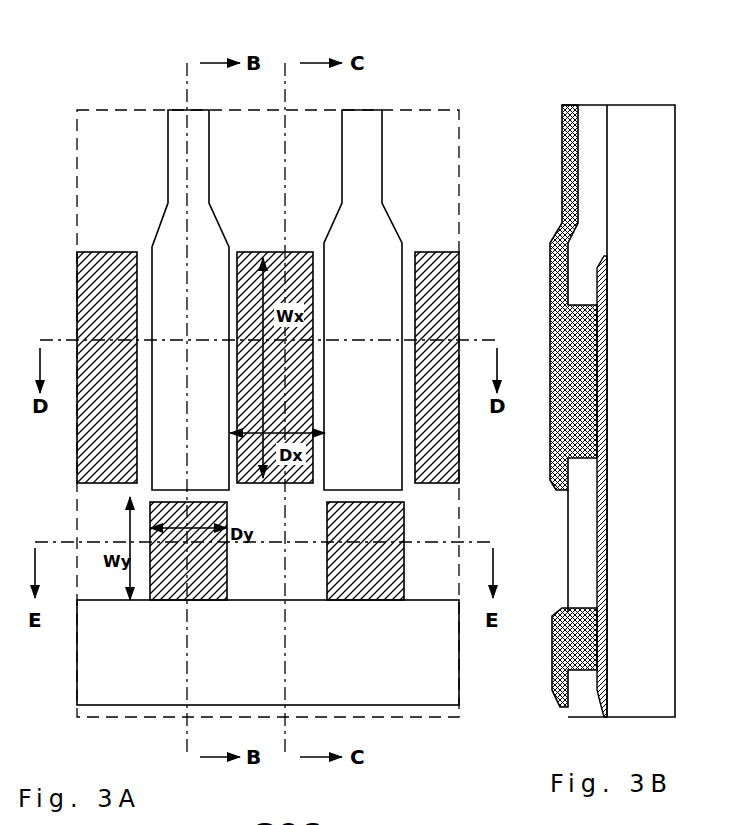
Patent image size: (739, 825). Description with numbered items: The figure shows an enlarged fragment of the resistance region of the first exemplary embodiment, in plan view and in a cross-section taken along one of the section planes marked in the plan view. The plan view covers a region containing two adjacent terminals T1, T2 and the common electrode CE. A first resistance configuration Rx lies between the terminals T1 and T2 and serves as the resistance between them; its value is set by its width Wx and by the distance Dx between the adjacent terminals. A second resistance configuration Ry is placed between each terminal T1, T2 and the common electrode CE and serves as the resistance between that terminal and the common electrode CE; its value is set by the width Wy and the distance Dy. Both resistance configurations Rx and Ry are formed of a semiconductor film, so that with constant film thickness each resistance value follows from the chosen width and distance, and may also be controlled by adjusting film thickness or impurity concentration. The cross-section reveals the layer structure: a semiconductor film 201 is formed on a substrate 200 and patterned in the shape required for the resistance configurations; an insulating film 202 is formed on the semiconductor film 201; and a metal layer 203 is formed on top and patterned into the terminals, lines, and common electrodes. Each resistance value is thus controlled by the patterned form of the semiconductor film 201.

In FIG. 3A, the terminal T1 is at (168, 250).
In FIG. 3A, the terminal T2 is at (373, 263).
In FIG. 3A, the first resistance configuration Rx is at (325, 270).
In FIG. 3A, the second resistance configuration Ry is at (157, 600).
In FIG. 3A, the common electrode CE is at (447, 683).
In FIG. 3B, the substrate 200 is at (653, 228).
In FIG. 3B, the semiconductor film 201 is at (607, 300).
In FIG. 3B, the insulating film 202 is at (600, 105).
In FIG. 3B, the metal layer 203 is at (573, 105).